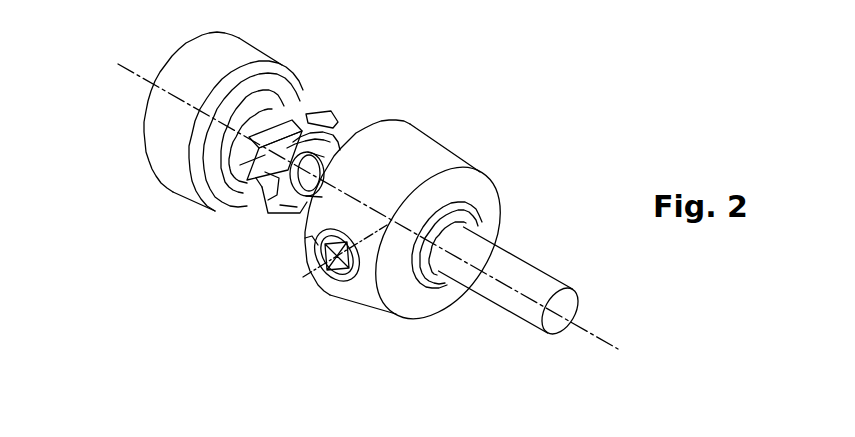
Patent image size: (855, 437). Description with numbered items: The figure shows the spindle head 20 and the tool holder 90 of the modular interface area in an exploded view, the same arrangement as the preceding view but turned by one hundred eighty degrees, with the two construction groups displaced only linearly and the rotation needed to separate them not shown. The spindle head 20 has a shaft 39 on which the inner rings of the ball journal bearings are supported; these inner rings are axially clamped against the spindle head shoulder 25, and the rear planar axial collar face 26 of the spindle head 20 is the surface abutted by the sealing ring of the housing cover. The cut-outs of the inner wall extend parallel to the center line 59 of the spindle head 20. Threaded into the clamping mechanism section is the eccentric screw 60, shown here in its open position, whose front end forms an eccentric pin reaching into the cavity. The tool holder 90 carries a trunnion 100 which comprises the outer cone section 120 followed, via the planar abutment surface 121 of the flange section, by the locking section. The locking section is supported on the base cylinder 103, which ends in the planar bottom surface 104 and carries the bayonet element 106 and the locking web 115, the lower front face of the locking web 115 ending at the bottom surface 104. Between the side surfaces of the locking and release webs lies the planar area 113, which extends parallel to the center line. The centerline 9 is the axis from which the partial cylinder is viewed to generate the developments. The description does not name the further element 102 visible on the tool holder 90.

The centerline 9 is at (429, 206).
The center line 59 is at (602, 338).
The spindle head 20 is at (443, 143).
The spindle head shoulder 25 is at (433, 283).
The rear planar axial collar face 26 is at (408, 302).
The shaft 39 is at (497, 292).
The eccentric screw 60 is at (340, 272).
The tool holder 90 is at (152, 180).
The trunnion 100 is at (297, 95).
The bore 102 is at (215, 200).
The base cylinder 103 is at (285, 123).
The planar bottom surface 104 is at (325, 138).
The bayonet element 106 is at (320, 117).
The planar area 113 is at (250, 177).
The locking web 115 is at (267, 207).
The outer cone section 120 is at (210, 178).
The abutment surface 121 is at (230, 190).